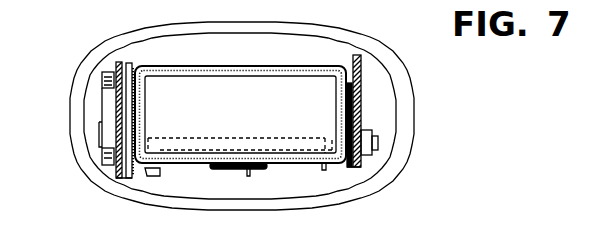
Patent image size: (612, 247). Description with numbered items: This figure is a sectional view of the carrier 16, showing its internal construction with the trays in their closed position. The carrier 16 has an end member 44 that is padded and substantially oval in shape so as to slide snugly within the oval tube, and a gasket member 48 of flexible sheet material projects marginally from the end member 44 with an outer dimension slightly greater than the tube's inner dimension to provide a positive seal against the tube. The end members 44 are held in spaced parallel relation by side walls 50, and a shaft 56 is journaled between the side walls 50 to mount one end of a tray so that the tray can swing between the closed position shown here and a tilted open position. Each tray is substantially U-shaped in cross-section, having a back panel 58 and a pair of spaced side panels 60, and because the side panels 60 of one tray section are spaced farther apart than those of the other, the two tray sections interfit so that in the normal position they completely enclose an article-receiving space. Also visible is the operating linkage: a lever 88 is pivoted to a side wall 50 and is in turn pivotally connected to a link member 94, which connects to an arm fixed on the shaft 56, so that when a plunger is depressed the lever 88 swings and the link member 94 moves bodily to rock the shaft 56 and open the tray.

The carrier 16 is at (415, 114).
The end member 44 is at (382, 137).
The gasket member 48 is at (381, 168).
The side wall 50 is at (117, 62).
The shaft 56 is at (368, 135).
The back panel 58 is at (232, 72).
The side panel 60 is at (143, 99).
The lever 88 is at (105, 102).
The link member 94 is at (131, 178).